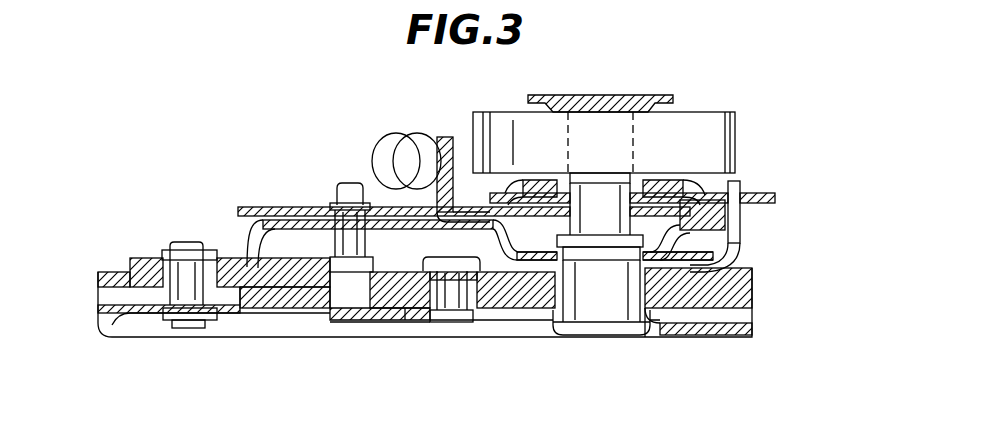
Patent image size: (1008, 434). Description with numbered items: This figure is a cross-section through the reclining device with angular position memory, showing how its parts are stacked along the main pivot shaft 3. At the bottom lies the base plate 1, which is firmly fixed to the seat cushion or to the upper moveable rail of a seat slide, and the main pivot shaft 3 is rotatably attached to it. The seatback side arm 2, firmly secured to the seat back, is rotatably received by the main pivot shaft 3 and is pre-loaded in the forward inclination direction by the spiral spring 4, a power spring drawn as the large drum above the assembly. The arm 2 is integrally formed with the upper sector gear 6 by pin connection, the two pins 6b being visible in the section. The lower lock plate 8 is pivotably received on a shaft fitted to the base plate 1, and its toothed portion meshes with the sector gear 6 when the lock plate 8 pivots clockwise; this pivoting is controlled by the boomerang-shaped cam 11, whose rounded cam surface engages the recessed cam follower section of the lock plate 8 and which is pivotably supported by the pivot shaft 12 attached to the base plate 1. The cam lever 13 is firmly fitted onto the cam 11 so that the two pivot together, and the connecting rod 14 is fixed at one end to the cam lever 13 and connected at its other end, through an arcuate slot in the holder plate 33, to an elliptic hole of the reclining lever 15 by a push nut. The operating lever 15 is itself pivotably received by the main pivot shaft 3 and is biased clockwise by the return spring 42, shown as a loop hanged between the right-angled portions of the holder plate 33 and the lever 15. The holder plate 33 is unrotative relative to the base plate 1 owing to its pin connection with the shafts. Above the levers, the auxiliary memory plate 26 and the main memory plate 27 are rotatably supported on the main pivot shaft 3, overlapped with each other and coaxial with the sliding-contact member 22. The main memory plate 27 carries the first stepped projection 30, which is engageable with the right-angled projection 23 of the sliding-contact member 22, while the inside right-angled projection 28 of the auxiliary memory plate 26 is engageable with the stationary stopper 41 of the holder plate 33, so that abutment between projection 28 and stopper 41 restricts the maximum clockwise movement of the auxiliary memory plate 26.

The base plate 1 is at (717, 333).
The seatback side arm 2 is at (508, 300).
The main pivot shaft 3 is at (620, 320).
The spiral spring 4 is at (732, 128).
The upper sector gear 6 is at (407, 320).
The pins 6b is at (452, 322).
The lower lock plate 8 is at (363, 322).
The boomerang-shaped cam 11 is at (247, 313).
The pivot shaft 12 is at (187, 322).
The cam lever 13 is at (322, 300).
The connecting rod 14 is at (345, 182).
The reclining lever 15 is at (263, 207).
The sliding-contact member 22 is at (537, 330).
The right-angled projection 23 is at (737, 187).
The auxiliary memory plate 26 is at (660, 167).
The main memory plate 27 is at (690, 183).
The inside right-angled projection 28 is at (715, 210).
The first stepped projection 30 is at (777, 198).
The holder plate 33 is at (253, 230).
The stationary stopper 41 is at (737, 235).
The return spring 42 is at (418, 133).